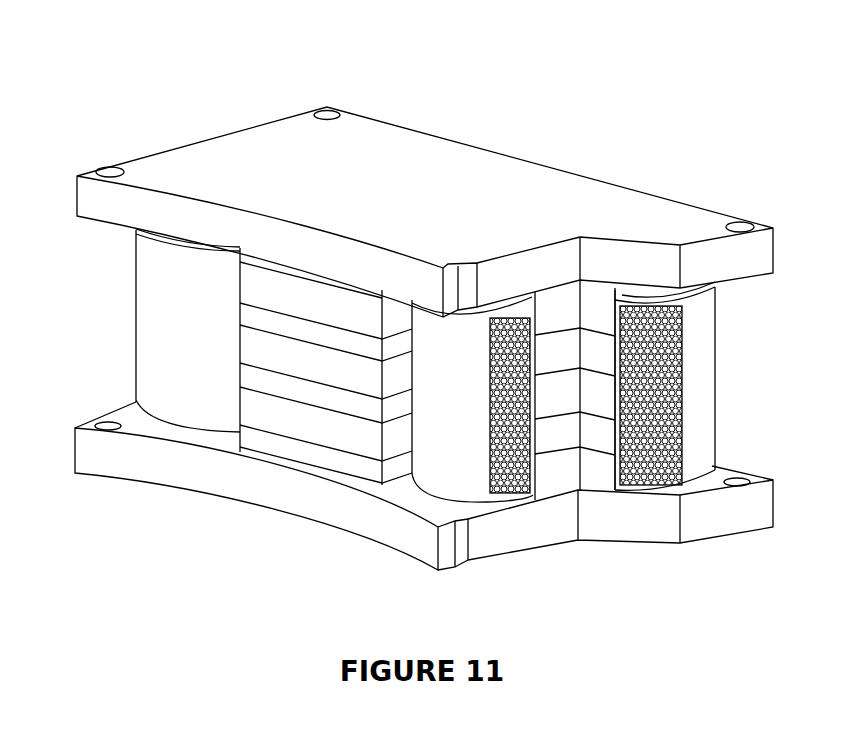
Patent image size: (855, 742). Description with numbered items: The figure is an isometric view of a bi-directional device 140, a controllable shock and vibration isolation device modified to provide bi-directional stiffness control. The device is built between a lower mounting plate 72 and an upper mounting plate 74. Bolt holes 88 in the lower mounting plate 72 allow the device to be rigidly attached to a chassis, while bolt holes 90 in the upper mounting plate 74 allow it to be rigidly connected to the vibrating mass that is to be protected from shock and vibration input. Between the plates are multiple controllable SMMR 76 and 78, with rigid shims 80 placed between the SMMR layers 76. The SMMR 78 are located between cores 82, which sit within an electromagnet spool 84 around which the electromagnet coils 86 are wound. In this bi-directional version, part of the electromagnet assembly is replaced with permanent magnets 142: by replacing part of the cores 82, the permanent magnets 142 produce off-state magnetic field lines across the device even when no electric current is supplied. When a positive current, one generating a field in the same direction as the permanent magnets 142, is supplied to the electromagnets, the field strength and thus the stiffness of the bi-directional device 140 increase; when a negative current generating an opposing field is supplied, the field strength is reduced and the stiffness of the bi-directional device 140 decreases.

The lower mounting plate 72 is at (373, 518).
The upper mounting plate 74 is at (440, 178).
The controllable SMMR layers 76 is at (358, 427).
The controllable SMMR 78 is at (698, 392).
The rigid shims 80 is at (302, 448).
The cores 82 is at (593, 320).
The electromagnet spools 84 is at (167, 240).
The electromagnet coils 86 is at (137, 317).
The bolt holes 88 is at (100, 427).
The bolt holes 90 is at (333, 113).
The bi-directional device 140 is at (611, 117).
The permanent magnets 142 is at (590, 357).